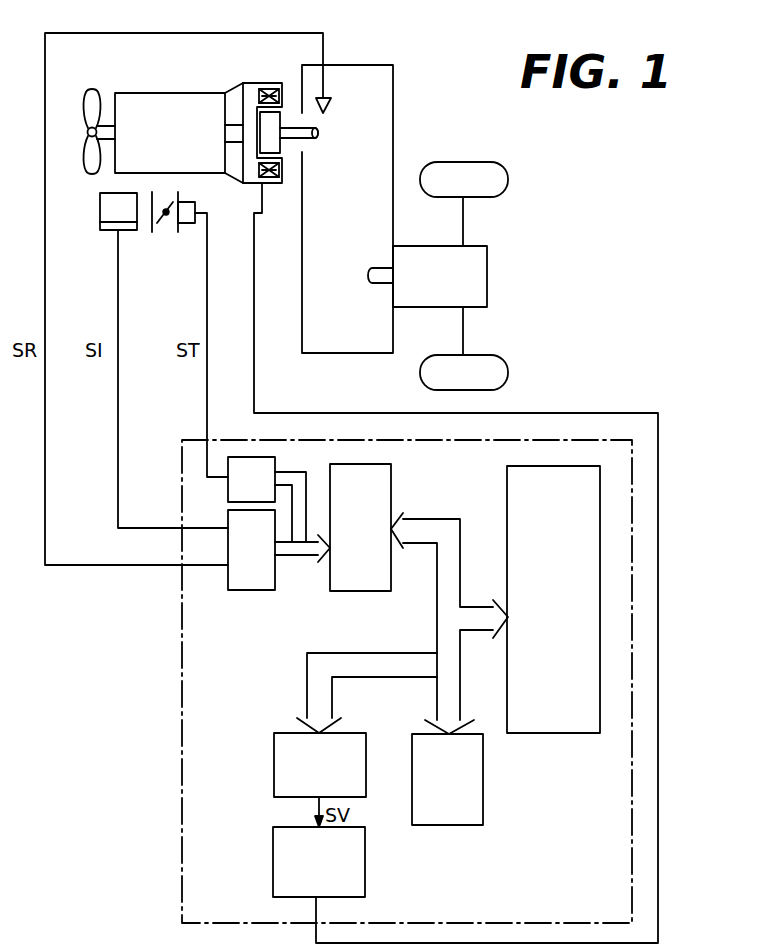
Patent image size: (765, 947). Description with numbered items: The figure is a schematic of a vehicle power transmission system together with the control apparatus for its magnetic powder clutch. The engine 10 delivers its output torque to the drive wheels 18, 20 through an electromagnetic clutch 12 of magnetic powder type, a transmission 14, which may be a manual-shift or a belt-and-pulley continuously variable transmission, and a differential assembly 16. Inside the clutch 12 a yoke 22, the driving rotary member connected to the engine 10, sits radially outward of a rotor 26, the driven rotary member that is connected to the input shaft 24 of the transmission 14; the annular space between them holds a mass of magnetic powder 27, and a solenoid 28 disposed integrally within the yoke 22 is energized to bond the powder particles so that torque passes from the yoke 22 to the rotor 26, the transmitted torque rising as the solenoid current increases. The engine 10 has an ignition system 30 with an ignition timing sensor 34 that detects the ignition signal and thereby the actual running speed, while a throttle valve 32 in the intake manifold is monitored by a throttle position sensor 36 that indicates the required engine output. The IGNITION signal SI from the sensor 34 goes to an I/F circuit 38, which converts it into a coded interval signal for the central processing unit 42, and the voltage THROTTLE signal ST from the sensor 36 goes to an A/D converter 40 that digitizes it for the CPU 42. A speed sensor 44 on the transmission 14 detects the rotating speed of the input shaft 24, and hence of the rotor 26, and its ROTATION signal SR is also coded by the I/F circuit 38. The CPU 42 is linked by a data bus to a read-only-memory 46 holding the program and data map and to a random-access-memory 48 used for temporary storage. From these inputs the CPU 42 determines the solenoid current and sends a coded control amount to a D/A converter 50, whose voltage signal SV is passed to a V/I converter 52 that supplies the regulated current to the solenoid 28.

The engine 10 is at (133, 99).
The electromagnetic clutch 12 is at (276, 105).
The transmission 14 is at (393, 82).
The differential assembly 16 is at (477, 283).
The drive wheel 18 is at (507, 180).
The drive wheel 20 is at (498, 372).
The yoke 22 is at (250, 97).
The input shaft 24 is at (317, 134).
The rotor 26 is at (283, 147).
The magnetic powder 27 is at (246, 187).
The solenoid 28 is at (268, 92).
The ignition system 30 is at (108, 207).
The throttle valve 32 is at (165, 236).
The ignition timing sensor 34 is at (110, 226).
The throttle position sensor 36 is at (193, 225).
The I/F circuit 38 is at (245, 590).
The A/D converter 40 is at (228, 490).
The central processing unit 42 is at (391, 487).
The speed sensor 44 is at (328, 97).
The read-only-memory 46 is at (577, 723).
The random-access-memory 48 is at (483, 799).
The D/A converter 50 is at (274, 765).
The V/I converter 52 is at (273, 860).